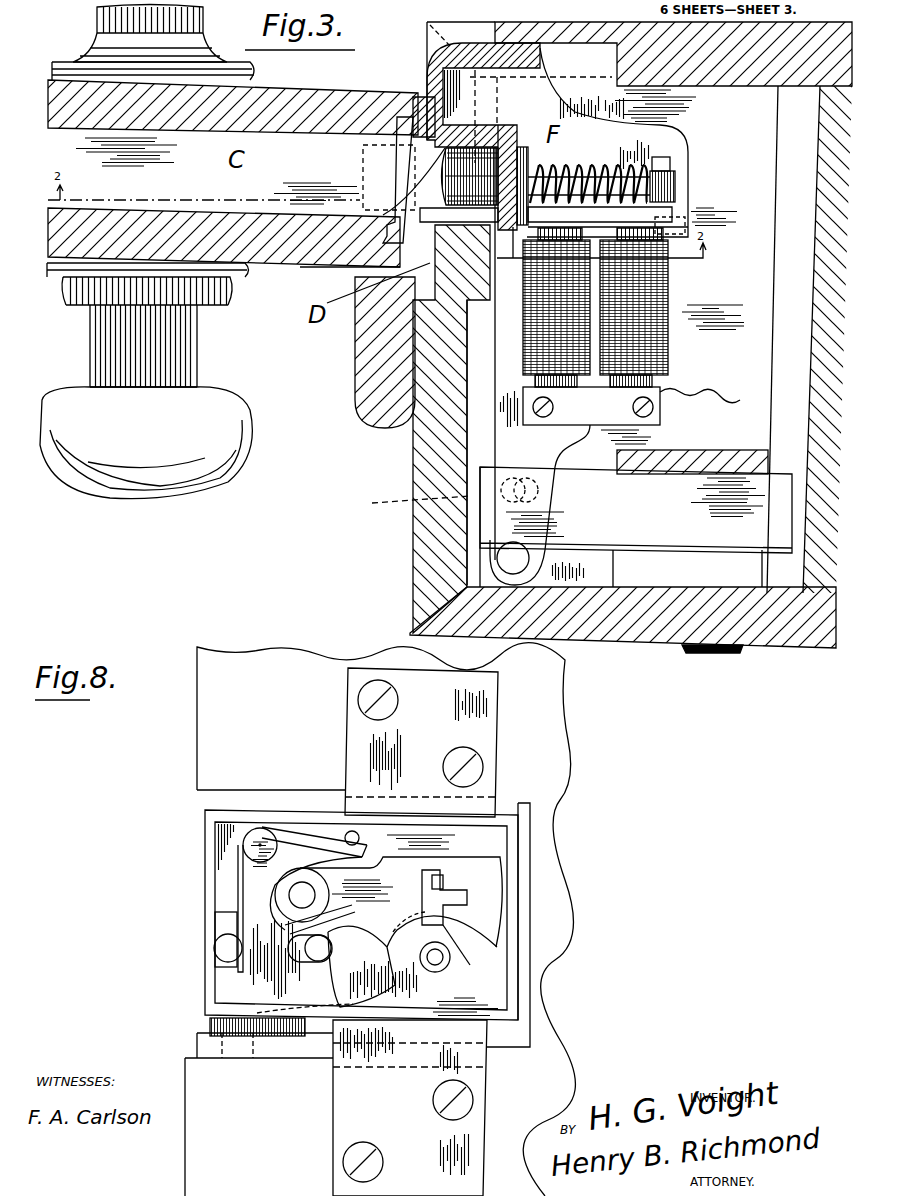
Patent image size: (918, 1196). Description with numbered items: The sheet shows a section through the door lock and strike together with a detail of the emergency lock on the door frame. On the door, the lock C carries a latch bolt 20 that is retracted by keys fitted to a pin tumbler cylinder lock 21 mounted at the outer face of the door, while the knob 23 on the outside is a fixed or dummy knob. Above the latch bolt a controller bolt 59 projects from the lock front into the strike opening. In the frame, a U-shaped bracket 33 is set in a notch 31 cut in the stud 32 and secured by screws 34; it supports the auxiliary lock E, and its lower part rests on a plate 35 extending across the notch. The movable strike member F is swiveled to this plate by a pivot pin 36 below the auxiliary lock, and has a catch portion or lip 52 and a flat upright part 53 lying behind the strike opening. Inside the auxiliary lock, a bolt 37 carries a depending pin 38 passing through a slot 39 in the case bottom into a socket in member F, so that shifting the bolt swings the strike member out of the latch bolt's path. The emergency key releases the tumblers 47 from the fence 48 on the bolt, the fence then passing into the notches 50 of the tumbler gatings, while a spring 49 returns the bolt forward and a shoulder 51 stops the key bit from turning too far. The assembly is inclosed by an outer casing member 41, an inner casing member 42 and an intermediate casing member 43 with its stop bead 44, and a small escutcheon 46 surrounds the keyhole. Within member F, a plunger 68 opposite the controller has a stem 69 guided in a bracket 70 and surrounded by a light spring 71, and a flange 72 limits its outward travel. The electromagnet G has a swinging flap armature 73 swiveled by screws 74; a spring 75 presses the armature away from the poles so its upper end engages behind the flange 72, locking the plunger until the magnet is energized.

In FIG. 3, the latch bolt 20 is at (330, 268).
In FIG. 3, the pin tumbler cylinder lock 21 is at (195, 335).
In FIG. 3, the outside knob 23 is at (235, 468).
In FIG. 8, the notch 31 is at (520, 812).
In FIG. 8, the stud 32 is at (265, 962).
In FIG. 8, the U-shaped bracket 33 is at (487, 742).
In FIG. 8, the screws 34 is at (478, 780).
In FIG. 3, the plate 35 is at (762, 339).
In FIG. 8, the plate 35 is at (328, 1048).
In FIG. 3, the pivot pin 36 is at (497, 559).
In FIG. 8, the pivot pin 36 is at (233, 1048).
In FIG. 8, the bolt 37 is at (225, 922).
In FIG. 3, the depending pin 38 is at (405, 508).
In FIG. 8, the depending pin 38 is at (208, 1010).
In FIG. 3, the slot 39 is at (540, 490).
In FIG. 8, the slot 39 is at (316, 1004).
In FIG. 3, the outer casing member 41 is at (608, 632).
In FIG. 3, the inner casing member 42 is at (712, 28).
In FIG. 3, the intermediate casing member 43 is at (418, 449).
In FIG. 3, the stop bead 44 is at (362, 389).
In FIG. 3, the escutcheon 46 is at (728, 655).
In FIG. 8, the tumblers 47 is at (395, 932).
In FIG. 8, the stem or fence 48 is at (443, 882).
In FIG. 8, the spring 49 is at (240, 873).
In FIG. 8, the notches 50 is at (458, 903).
In FIG. 8, the shoulder 51 is at (456, 962).
In FIG. 3, the catch portion or lip 52 is at (433, 140).
In FIG. 3, the flat upright part 53 is at (532, 168).
In FIG. 3, the controller bolt 59 is at (420, 163).
In FIG. 3, the plunger 68 is at (487, 146).
In FIG. 3, the stem 69 is at (676, 185).
In FIG. 3, the bracket 70 is at (667, 167).
In FIG. 3, the spring 71 is at (620, 172).
In FIG. 3, the flange 72 is at (527, 160).
In FIG. 3, the swinging flap armature 73 is at (640, 228).
In FIG. 3, the screws 74 is at (517, 240).
In FIG. 3, the spring 75 is at (650, 218).